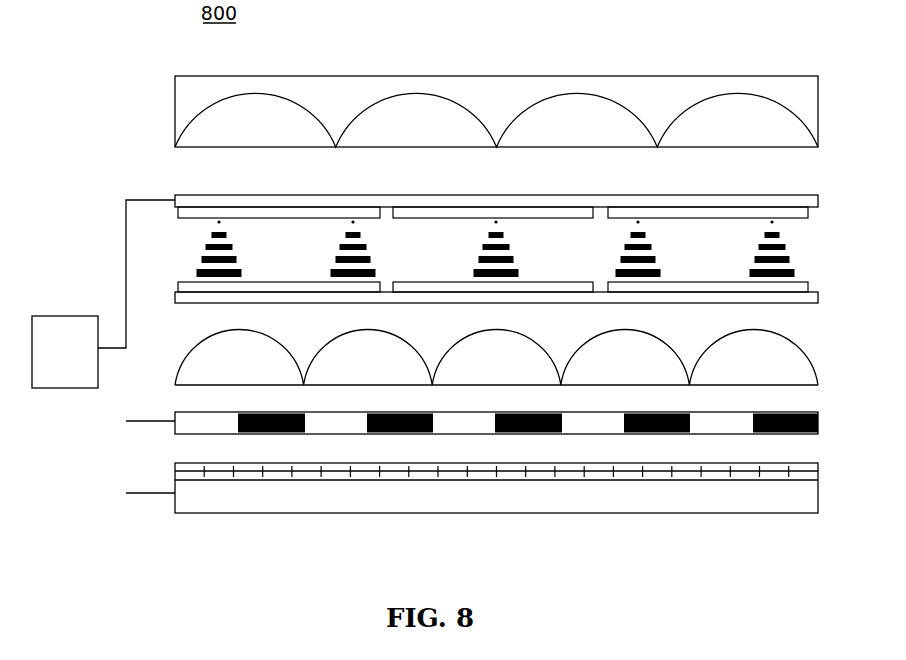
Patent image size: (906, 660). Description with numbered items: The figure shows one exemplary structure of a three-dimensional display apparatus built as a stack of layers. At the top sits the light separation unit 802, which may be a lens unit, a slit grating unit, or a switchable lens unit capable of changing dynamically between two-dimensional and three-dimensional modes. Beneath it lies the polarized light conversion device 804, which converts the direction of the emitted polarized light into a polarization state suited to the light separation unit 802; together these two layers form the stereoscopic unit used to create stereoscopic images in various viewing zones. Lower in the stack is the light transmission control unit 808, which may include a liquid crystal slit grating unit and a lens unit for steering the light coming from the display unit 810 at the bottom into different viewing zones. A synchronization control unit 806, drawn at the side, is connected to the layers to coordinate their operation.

The light separation unit 802 is at (175, 122).
The polarized light conversion device 804 is at (167, 218).
The synchronization control unit 806 is at (60, 316).
The light transmission control unit 808 is at (172, 402).
The display unit 810 is at (185, 497).